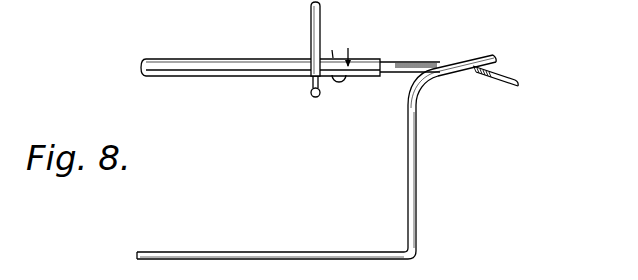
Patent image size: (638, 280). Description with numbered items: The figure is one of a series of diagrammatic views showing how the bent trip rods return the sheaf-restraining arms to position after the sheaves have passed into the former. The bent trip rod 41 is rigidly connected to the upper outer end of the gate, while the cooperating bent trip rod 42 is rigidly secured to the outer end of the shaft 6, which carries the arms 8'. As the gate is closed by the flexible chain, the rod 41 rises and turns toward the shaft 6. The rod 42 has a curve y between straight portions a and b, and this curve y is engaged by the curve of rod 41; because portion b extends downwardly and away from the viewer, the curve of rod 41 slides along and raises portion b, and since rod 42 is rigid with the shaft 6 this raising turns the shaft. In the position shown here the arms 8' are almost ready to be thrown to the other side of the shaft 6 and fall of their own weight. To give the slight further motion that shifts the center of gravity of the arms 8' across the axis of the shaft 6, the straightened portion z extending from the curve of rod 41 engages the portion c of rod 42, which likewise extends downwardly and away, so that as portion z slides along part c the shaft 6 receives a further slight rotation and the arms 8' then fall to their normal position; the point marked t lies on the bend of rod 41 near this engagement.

The shaft 6 is at (262, 76).
The arms 8' is at (303, 49).
The bent trip rod 41 is at (416, 170).
The bent trip rod 42 is at (511, 75).
The straight portion a is at (389, 50).
The curve y is at (414, 52).
The straight portion b is at (444, 57).
The straightened portion z is at (487, 56).
The portion c is at (492, 74).
The bend t is at (426, 86).